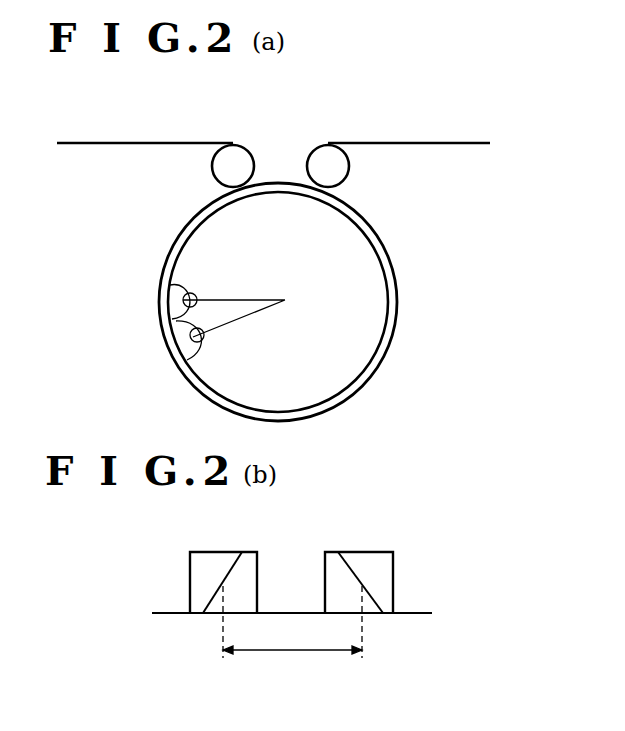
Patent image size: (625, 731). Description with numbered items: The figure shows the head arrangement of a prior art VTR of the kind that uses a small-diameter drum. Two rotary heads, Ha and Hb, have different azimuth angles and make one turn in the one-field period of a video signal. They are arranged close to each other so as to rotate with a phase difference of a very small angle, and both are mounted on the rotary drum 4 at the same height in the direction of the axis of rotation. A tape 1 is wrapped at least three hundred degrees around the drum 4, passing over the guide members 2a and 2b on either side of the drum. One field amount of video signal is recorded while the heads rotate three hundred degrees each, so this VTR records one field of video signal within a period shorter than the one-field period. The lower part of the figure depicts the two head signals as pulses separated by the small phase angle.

The tape 1 is at (464, 140).
The feed roller 2a is at (226, 166).
The feed roller 2b is at (335, 165).
The rotary drum 4 is at (362, 253).